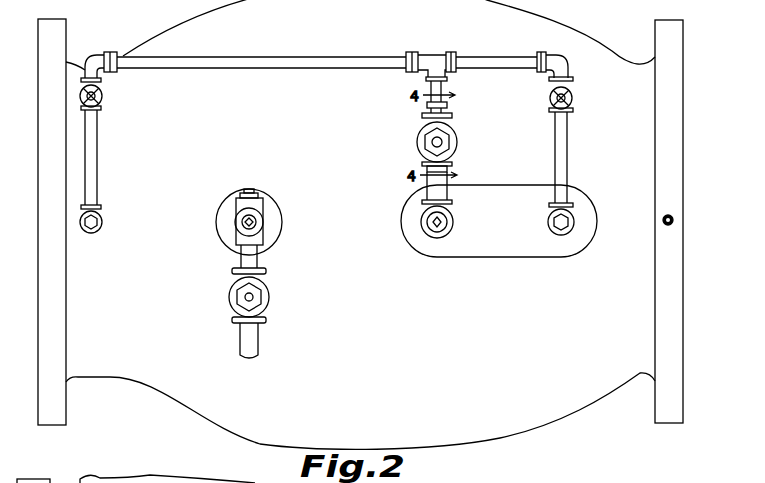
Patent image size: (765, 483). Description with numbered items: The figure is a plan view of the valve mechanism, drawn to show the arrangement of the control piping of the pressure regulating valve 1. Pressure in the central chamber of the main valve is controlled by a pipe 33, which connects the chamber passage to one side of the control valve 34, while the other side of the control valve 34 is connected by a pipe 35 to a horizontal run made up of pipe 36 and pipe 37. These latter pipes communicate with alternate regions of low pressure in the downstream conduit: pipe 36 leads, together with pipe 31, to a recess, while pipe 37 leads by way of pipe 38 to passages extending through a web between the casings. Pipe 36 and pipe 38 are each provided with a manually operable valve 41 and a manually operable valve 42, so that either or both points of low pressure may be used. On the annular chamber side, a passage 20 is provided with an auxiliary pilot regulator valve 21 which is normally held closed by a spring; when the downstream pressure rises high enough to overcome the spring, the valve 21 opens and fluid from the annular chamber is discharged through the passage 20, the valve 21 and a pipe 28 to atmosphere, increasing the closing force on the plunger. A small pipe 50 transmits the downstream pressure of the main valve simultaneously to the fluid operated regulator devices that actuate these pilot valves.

The vehicle body/tank 1 is at (536, 423).
The passage 20 is at (262, 222).
The auxiliary pilot regulator valve 21 is at (267, 297).
The pipe 28 is at (252, 346).
The pipe 31 is at (100, 206).
The pipe 33 is at (442, 188).
The control valve 34 is at (457, 146).
The pipe 35 is at (445, 78).
The pipe 36 is at (385, 46).
The pipe 37 is at (500, 46).
The pipe 38 is at (565, 164).
The manually operable valve 41 is at (106, 96).
The manually operable valve 42 is at (580, 95).
The small pipe 50 is at (666, 224).